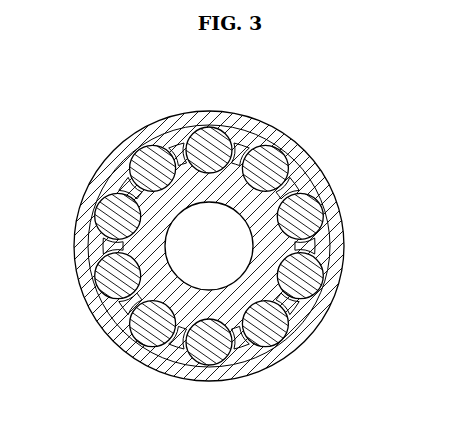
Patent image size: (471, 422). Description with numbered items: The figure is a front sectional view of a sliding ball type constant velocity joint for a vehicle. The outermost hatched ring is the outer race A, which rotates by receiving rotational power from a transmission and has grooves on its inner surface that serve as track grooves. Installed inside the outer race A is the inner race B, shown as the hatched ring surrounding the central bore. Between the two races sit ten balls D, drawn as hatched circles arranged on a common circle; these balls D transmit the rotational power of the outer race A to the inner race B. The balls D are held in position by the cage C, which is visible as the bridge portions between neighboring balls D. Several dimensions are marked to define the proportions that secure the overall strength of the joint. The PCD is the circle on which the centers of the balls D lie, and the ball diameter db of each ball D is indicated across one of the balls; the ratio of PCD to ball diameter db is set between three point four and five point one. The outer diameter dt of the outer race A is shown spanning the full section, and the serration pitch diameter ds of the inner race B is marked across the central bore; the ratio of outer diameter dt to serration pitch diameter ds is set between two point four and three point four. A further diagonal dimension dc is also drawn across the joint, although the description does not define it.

The outer race A is at (222, 185).
The inner race B is at (268, 160).
The cage C is at (292, 180).
The balls D is at (324, 182).
The cage diameter dc is at (295, 184).
The serration pitch diameter ds is at (248, 207).
The ball diameter db is at (180, 297).
The element PCD is at (209, 149).
The outer diameter dt is at (215, 111).